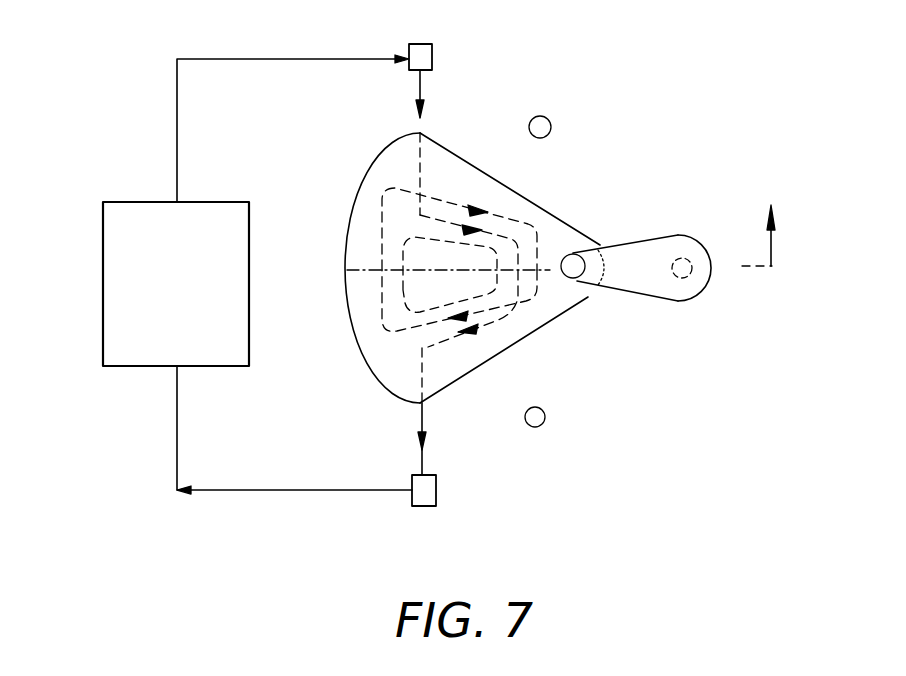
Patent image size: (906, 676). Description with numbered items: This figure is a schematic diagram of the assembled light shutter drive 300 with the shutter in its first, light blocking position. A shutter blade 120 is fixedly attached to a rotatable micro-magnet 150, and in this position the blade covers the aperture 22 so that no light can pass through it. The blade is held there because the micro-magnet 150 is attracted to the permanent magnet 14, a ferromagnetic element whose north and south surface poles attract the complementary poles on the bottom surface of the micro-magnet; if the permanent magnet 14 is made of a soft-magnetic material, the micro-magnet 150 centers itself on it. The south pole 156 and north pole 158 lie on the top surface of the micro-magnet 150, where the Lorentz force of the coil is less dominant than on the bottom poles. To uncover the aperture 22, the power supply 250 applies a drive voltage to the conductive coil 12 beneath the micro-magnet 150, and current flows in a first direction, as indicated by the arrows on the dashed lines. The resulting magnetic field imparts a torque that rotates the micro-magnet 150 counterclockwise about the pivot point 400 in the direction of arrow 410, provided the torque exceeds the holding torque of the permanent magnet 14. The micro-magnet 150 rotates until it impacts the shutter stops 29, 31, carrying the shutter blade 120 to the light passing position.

The light shutter drive 300 is at (94, 108).
The power supply 250 is at (130, 217).
The conductive coil 12 is at (500, 216).
The micro-magnet 150 is at (455, 365).
The permanent magnet 14 is at (412, 238).
The south pole 156 is at (362, 228).
The north pole 158 is at (367, 303).
The shutter stop 29 is at (547, 119).
The shutter stop 31 is at (545, 417).
The pivot point 400 is at (574, 279).
The shutter blade 120 is at (654, 278).
The aperture 22 is at (681, 258).
The arrow 410 is at (775, 250).